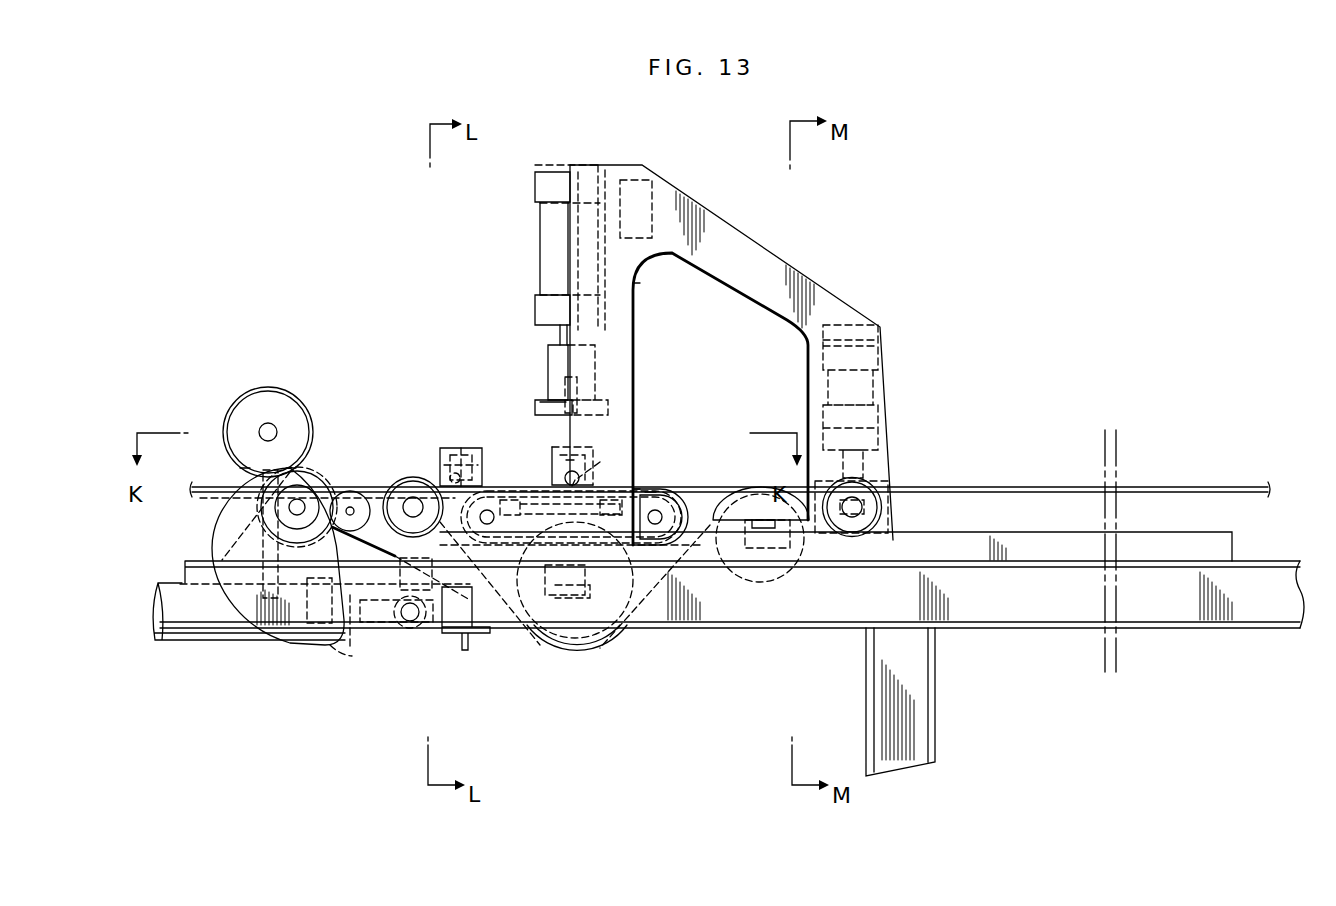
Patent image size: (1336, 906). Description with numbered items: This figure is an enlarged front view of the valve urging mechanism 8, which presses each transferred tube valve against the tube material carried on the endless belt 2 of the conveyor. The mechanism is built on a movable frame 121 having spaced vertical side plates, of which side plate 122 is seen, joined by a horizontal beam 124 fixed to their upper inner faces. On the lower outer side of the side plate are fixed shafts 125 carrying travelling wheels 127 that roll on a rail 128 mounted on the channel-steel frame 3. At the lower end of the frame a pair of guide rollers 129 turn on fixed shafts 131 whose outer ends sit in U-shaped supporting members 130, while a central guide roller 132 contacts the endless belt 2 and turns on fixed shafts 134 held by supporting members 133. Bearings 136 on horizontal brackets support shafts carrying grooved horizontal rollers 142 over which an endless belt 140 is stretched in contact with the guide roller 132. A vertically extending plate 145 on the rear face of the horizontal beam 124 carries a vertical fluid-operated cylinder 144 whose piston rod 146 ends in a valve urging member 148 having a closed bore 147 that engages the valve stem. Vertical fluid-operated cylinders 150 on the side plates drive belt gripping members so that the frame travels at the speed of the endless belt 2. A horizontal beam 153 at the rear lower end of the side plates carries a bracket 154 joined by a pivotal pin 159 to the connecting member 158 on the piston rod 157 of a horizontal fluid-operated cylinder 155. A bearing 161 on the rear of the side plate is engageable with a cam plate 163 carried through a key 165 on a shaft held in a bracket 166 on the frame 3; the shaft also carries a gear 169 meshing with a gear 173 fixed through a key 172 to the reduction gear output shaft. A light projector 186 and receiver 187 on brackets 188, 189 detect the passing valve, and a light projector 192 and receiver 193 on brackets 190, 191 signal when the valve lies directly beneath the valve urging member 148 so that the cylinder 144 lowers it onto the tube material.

The endless belt 2 is at (1160, 486).
The frame 3 is at (1012, 630).
The valve urging mechanism 8 is at (496, 295).
The movable frame 121 is at (783, 266).
The side plate 122 is at (722, 232).
The horizontal beam 124 is at (650, 191).
The fixed shaft 125 is at (856, 507).
The travelling wheel 127 is at (390, 478).
The rail 128 is at (1158, 545).
The guide roller 129 is at (758, 496).
The U-shaped supporting member 130 is at (791, 548).
The fixed shaft 131 is at (745, 502).
The guide roller 132 is at (594, 646).
The supporting member 133 is at (600, 568).
The fixed shaft 134 is at (566, 582).
The bearing 136 is at (670, 512).
The endless belt 140 is at (640, 487).
The horizontal roller 142 is at (654, 494).
The vertical fluid-operated cylinder 144 is at (556, 181).
The vertically extending plate 145 is at (634, 284).
The piston rod 146 is at (560, 334).
The closed bore 147 is at (568, 466).
The valve urging member 148 is at (548, 362).
The vertical fluid-operated cylinder 150 is at (870, 392).
The horizontal beam 153 is at (478, 626).
The bracket 154 is at (426, 633).
The horizontal fluid-operated cylinder 155 is at (182, 642).
The piston rod 157 is at (340, 646).
The connecting member 158 is at (372, 629).
The pivotal pin 159 is at (406, 625).
The bearing 161 is at (350, 491).
The cam plate 163 is at (248, 600).
The key 165 is at (297, 498).
The bracket 166 is at (222, 534).
The gear 169 is at (305, 472).
The key 172 is at (266, 424).
The gear 173 is at (224, 418).
The light projector 186 is at (552, 477).
The light receiver 187 is at (545, 474).
The bracket 188 is at (443, 459).
The bracket 189 is at (440, 446).
The bracket 190 is at (552, 446).
The bracket 191 is at (548, 425).
The light projector 192 is at (600, 462).
The light receiver 193 is at (618, 446).